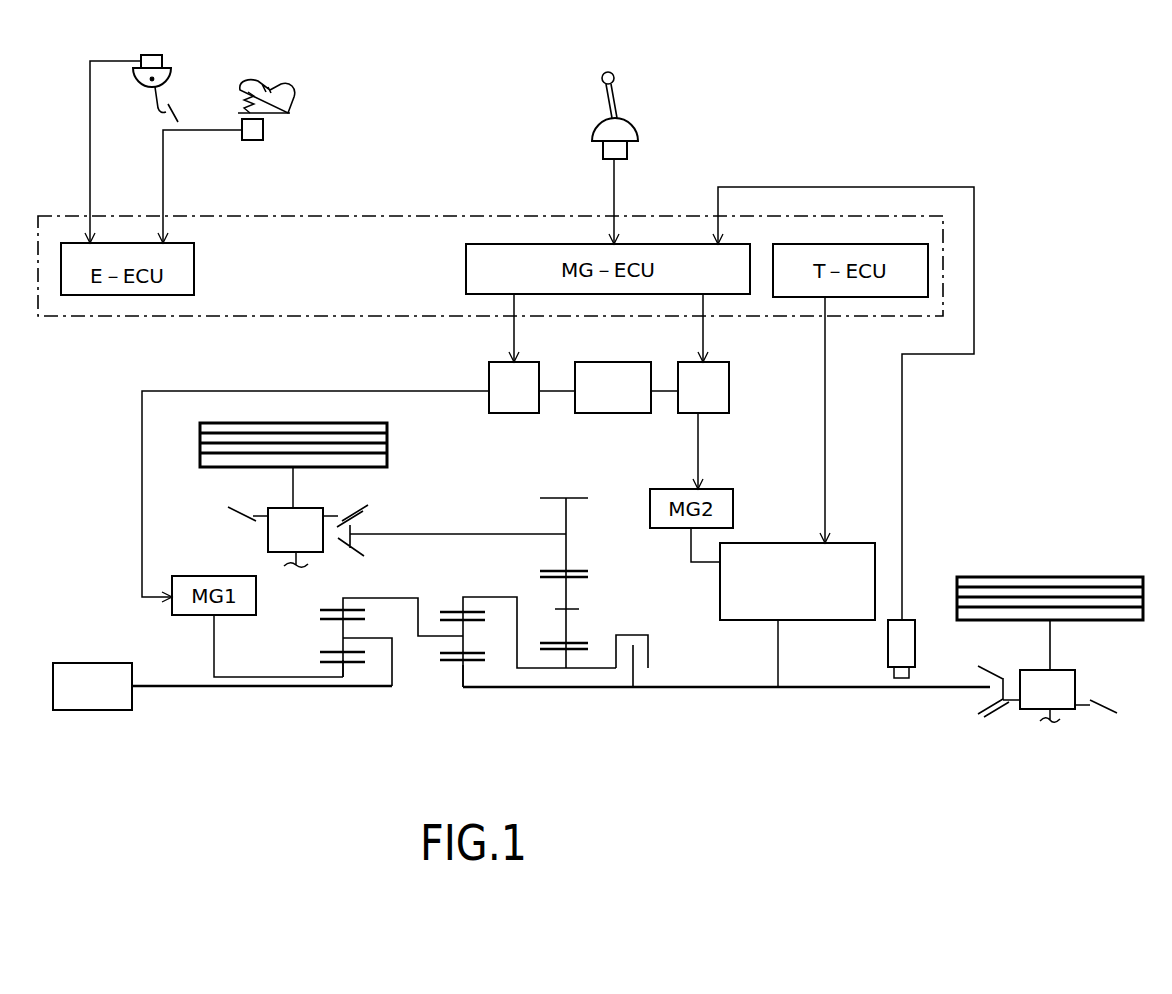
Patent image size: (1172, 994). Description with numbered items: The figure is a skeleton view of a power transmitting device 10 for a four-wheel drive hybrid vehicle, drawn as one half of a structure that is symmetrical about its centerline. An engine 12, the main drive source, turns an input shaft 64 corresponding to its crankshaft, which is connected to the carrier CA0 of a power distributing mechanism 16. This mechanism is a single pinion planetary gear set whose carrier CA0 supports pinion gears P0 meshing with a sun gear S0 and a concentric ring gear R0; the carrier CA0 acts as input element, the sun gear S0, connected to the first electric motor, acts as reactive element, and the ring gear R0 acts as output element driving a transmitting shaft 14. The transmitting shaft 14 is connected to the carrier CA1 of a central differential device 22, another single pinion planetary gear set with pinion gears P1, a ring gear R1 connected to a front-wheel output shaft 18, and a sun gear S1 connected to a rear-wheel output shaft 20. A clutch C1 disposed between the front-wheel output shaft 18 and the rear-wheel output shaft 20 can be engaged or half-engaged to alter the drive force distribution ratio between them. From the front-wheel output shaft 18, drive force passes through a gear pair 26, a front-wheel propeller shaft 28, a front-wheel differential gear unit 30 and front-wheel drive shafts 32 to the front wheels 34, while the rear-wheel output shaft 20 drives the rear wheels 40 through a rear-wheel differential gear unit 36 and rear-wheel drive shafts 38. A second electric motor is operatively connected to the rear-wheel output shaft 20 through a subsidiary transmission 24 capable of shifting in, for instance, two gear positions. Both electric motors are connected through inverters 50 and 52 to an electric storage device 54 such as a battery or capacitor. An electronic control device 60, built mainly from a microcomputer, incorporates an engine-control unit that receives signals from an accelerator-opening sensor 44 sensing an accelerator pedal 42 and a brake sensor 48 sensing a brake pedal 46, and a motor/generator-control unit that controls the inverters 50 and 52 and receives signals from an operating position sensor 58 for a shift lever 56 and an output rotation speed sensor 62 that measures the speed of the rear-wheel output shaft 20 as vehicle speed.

The power transmitting device 10 is at (861, 92).
The engine 12 is at (73, 668).
The transmitting shaft 14 is at (395, 598).
The power distributing mechanism 16 is at (345, 696).
The front-wheel output shaft 18 is at (478, 597).
The rear-wheel output shaft 20 is at (567, 690).
The central differential device 22 is at (470, 723).
The subsidiary transmission 24 is at (866, 556).
The gear pair 26 is at (606, 580).
The front-wheel propeller shaft 28 is at (421, 534).
The front-wheel differential gear unit 30 is at (230, 533).
The front-wheel drive shafts 32 is at (293, 495).
The front wheels 34 is at (326, 437).
The rear-wheel differential gear unit 36 is at (1032, 732).
The rear-wheel drive shafts 38 is at (1050, 647).
The rear wheels 40 is at (980, 590).
The accelerator pedal 42 is at (241, 90).
The accelerator-opening sensor 44 is at (263, 130).
The brake pedal 46 is at (167, 107).
The brake sensor 48 is at (152, 55).
The inverter 50 is at (509, 405).
The inverter 52 is at (720, 391).
The electric storage device 54 is at (627, 405).
The shift lever 56 is at (606, 93).
The operating position sensor 58 is at (603, 150).
The electronic control device 60 is at (396, 213).
The output rotation speed sensor 62 is at (908, 655).
The input shaft 64 is at (200, 688).
The ring gear R0 is at (338, 608).
The pinion gears P0 is at (338, 654).
The sun gear S0 is at (345, 668).
The carrier CA0 is at (355, 638).
The ring gear R1 is at (443, 611).
The pinion gears P1 is at (472, 654).
The sun gear S1 is at (455, 665).
The carrier CA1 is at (433, 634).
The clutch C1 is at (633, 650).